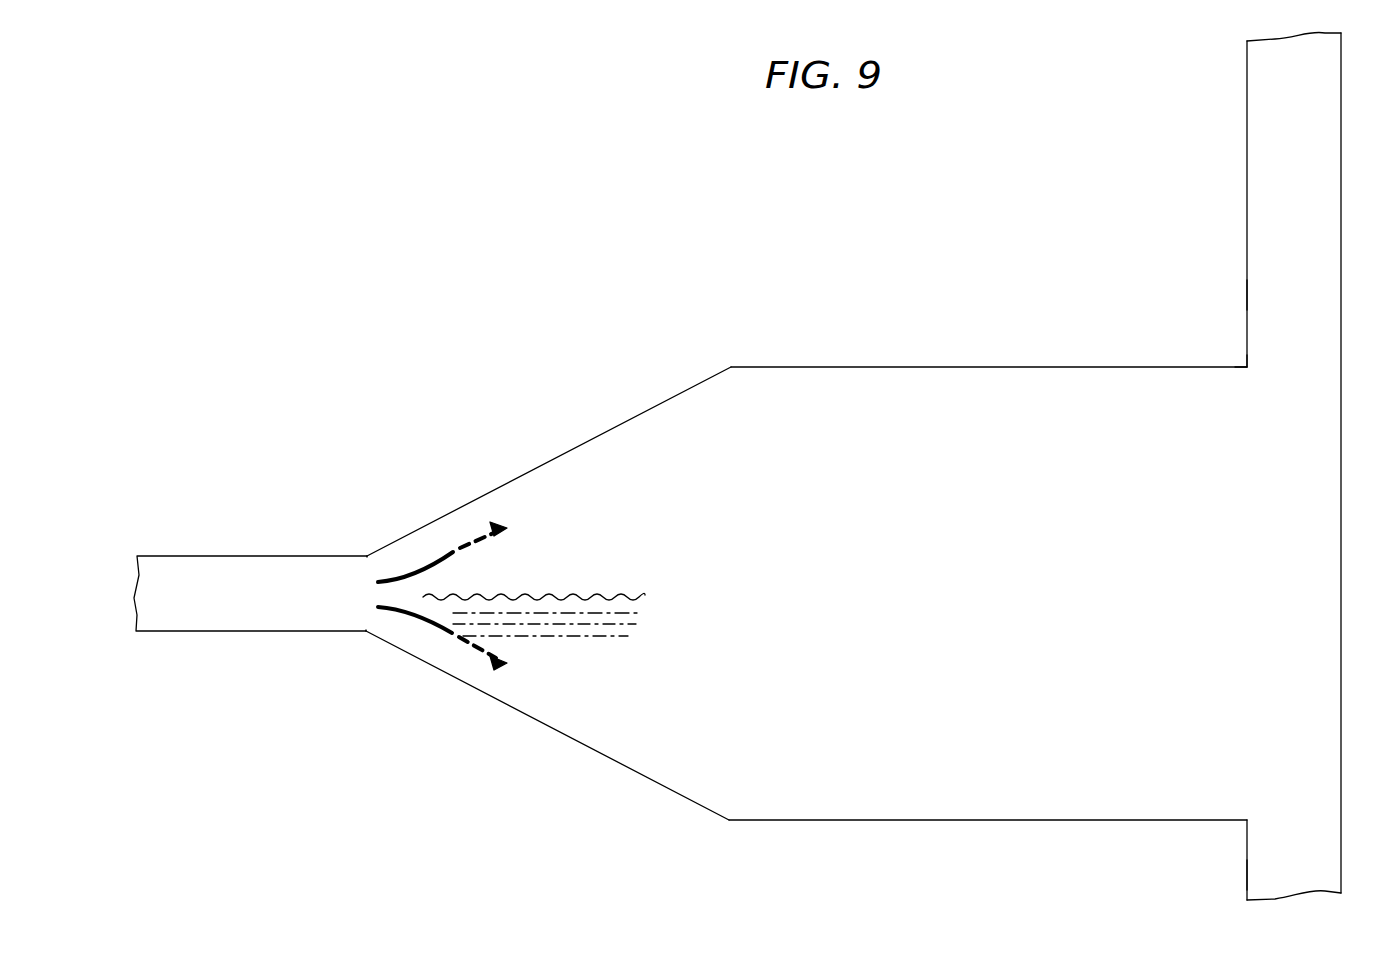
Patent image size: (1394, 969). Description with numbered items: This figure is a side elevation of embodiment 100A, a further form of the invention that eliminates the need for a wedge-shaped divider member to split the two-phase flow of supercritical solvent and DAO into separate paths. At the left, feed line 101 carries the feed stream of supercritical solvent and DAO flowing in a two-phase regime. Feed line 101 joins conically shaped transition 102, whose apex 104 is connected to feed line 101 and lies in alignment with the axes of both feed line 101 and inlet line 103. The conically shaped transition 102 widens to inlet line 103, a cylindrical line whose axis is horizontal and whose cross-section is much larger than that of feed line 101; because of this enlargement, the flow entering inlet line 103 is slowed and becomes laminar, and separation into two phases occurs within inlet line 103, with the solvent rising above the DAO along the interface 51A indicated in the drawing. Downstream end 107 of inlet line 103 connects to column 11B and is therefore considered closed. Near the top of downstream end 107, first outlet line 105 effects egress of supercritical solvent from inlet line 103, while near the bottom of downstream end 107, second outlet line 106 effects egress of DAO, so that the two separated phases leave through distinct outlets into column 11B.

The embodiment 100A is at (490, 283).
The feed line 101 is at (188, 632).
The conically shaped transition 102 is at (599, 436).
The inlet line 103 is at (953, 367).
The apex 104 is at (366, 632).
The first outlet line 105 is at (1259, 297).
The second outlet line 106 is at (1259, 877).
The downstream end 107 is at (1247, 368).
The column 11B is at (1341, 546).
The liquid interface 51A is at (535, 596).